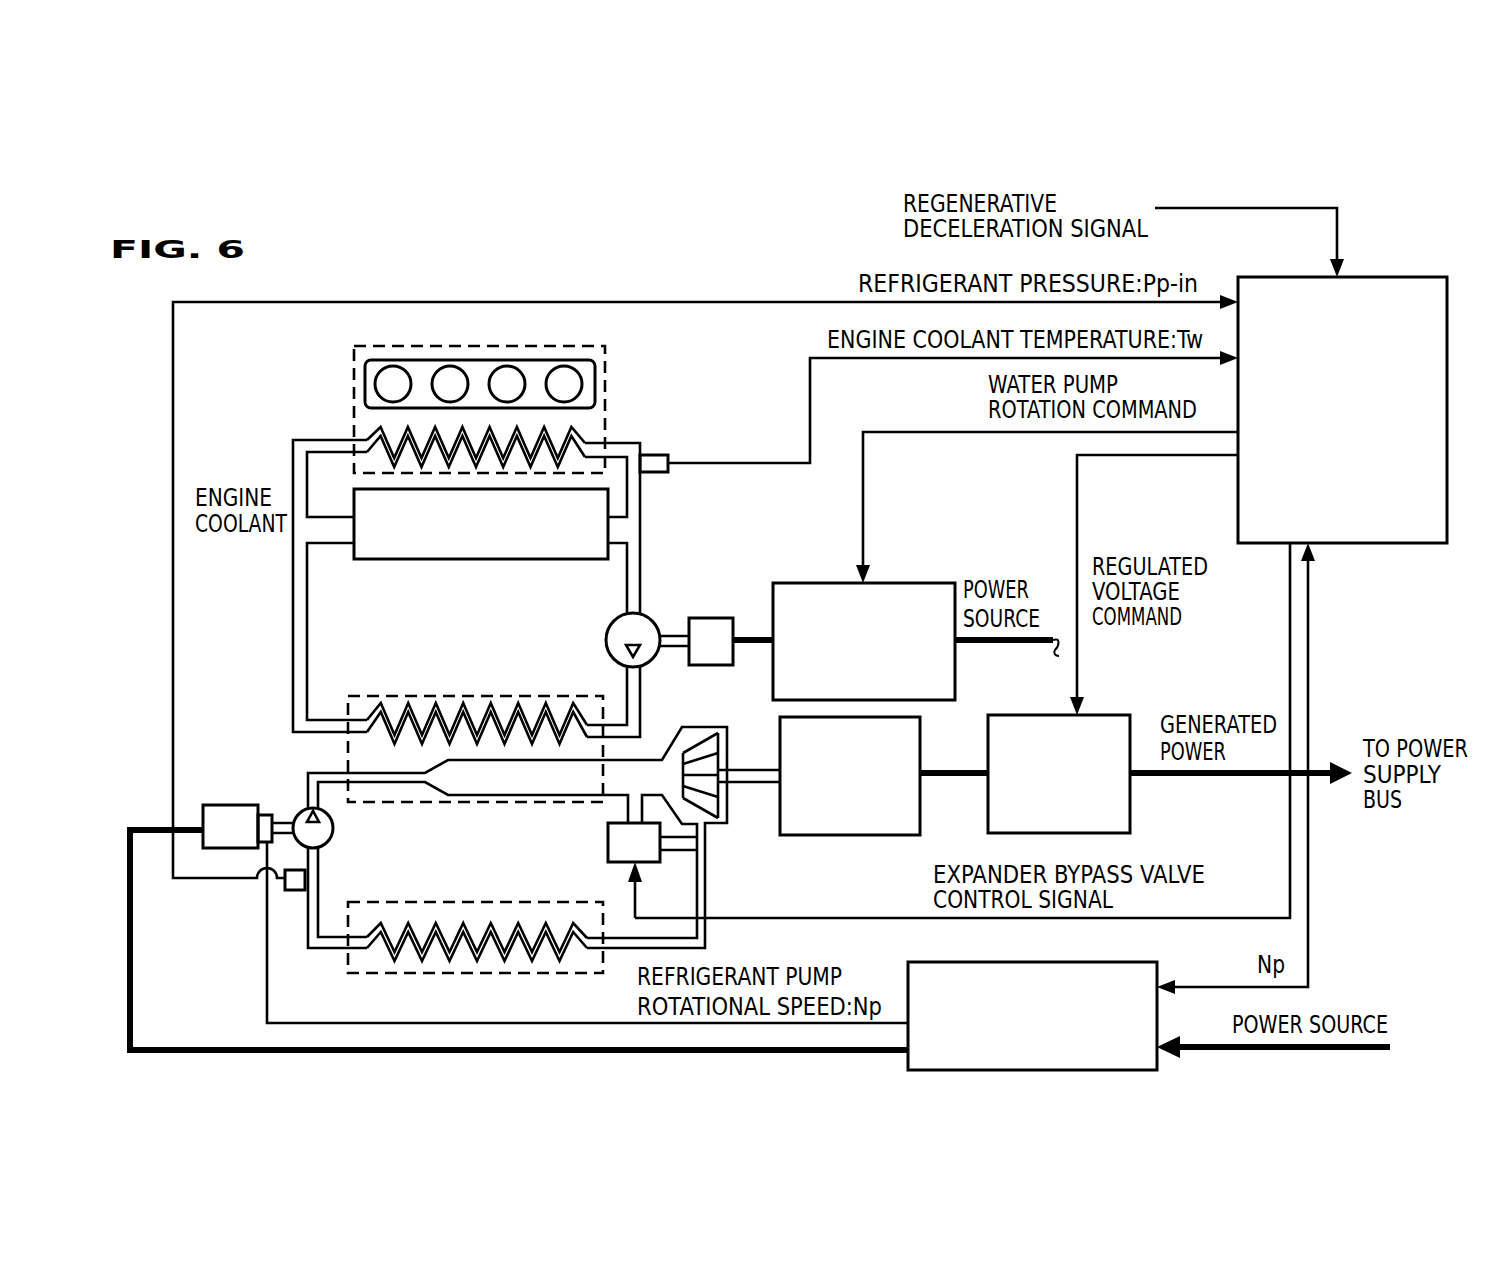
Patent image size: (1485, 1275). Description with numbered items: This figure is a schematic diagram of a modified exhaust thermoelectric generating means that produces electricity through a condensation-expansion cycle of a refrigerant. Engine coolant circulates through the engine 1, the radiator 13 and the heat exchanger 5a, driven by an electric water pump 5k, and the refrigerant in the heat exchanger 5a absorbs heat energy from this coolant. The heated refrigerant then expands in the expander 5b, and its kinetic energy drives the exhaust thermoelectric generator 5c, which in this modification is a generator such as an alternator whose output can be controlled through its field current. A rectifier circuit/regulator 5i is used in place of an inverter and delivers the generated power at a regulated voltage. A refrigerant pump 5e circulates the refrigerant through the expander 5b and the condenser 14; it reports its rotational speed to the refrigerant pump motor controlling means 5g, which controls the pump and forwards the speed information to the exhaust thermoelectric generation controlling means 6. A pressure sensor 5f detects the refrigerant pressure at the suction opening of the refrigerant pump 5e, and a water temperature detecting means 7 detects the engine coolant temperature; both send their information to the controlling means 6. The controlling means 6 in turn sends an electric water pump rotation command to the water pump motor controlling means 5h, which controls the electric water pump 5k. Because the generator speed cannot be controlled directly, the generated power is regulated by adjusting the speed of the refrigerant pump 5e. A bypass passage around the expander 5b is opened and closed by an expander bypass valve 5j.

The engine 1 is at (354, 372).
The heat exchanger 5a is at (368, 696).
The expander 5b is at (732, 817).
The exhaust thermoelectric generator 5c is at (920, 745).
The refrigerant pump 5e is at (238, 805).
The pressure sensor 5f is at (293, 892).
The refrigerant pump motor controlling means 5g is at (949, 962).
The water pump motor controlling means 5h is at (890, 580).
The rectifier circuit/regulator 5i is at (988, 800).
The expander bypass valve 5j is at (612, 846).
The electric water pump 5k is at (710, 617).
The exhaust thermoelectric generation controlling means 6 is at (1385, 276).
The water temperature detecting means 7 is at (655, 453).
The radiator 13 is at (470, 562).
The condenser 14 is at (392, 900).